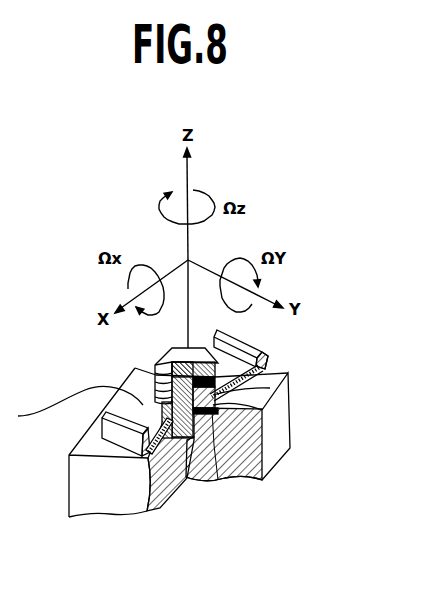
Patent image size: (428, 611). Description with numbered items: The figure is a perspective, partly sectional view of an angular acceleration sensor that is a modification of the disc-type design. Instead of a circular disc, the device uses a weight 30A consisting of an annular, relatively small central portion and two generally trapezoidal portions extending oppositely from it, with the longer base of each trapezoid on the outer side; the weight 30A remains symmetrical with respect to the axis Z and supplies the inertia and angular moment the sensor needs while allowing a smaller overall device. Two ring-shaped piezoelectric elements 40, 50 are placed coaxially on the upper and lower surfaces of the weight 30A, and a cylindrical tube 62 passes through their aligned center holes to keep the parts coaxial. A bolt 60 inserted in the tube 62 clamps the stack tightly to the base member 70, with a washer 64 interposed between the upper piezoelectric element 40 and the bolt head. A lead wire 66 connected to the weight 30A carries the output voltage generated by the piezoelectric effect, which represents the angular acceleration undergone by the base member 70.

The weight 30A is at (240, 354).
The piezoelectric element 40 is at (270, 398).
The piezoelectric element 50 is at (263, 409).
The bolt 60 is at (194, 352).
The cylindrical tube 62 is at (218, 480).
The washer 64 is at (280, 374).
The lead wire 66 is at (74, 397).
The base member 70 is at (133, 503).